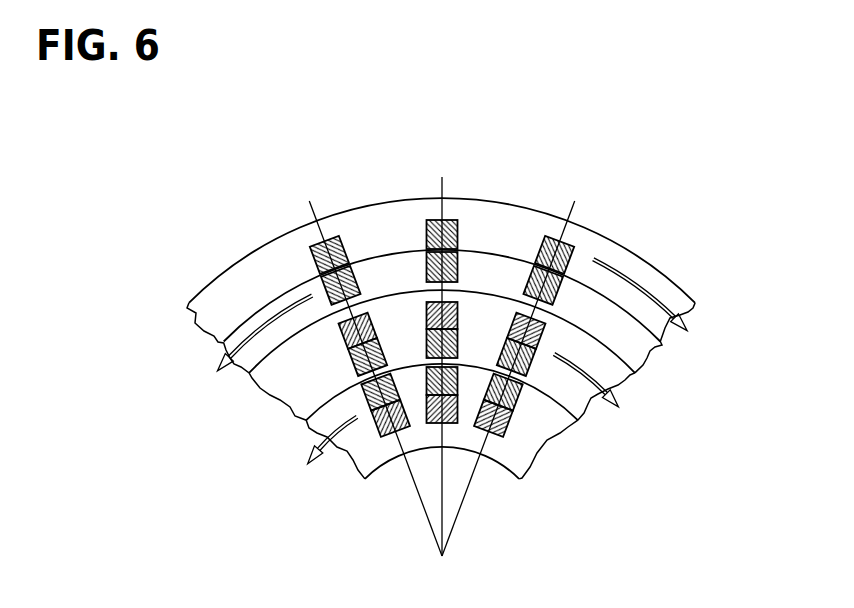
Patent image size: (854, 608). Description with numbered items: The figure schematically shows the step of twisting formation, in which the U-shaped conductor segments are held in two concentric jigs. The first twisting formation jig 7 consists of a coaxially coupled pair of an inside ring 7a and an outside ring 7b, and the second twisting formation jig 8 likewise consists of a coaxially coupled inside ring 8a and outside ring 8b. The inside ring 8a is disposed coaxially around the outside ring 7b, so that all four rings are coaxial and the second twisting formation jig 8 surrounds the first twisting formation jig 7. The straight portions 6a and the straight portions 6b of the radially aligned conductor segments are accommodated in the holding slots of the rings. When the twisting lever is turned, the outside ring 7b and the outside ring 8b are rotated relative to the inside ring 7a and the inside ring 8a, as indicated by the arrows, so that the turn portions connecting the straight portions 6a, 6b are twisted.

The second twisting formation jig 8 is at (162, 316).
The inside ring 8a is at (407, 267).
The outside ring 8b is at (352, 224).
The first twisting formation jig 7 is at (331, 501).
The inside ring 7a is at (547, 436).
The outside ring 7b is at (578, 396).
The straight portion 6a is at (540, 267).
The straight portion 6b is at (570, 250).